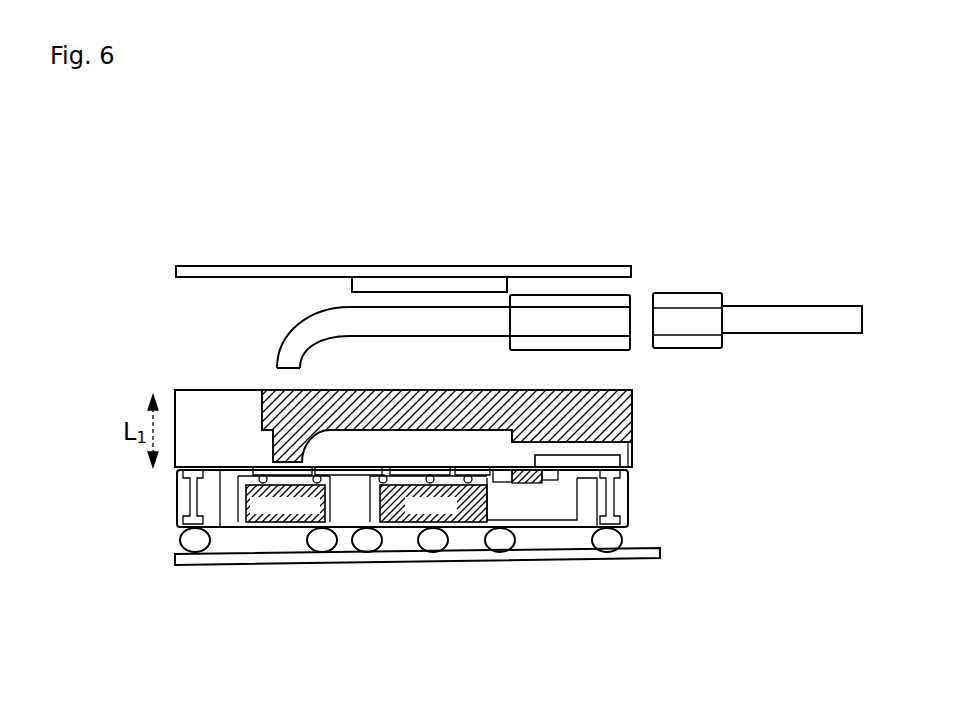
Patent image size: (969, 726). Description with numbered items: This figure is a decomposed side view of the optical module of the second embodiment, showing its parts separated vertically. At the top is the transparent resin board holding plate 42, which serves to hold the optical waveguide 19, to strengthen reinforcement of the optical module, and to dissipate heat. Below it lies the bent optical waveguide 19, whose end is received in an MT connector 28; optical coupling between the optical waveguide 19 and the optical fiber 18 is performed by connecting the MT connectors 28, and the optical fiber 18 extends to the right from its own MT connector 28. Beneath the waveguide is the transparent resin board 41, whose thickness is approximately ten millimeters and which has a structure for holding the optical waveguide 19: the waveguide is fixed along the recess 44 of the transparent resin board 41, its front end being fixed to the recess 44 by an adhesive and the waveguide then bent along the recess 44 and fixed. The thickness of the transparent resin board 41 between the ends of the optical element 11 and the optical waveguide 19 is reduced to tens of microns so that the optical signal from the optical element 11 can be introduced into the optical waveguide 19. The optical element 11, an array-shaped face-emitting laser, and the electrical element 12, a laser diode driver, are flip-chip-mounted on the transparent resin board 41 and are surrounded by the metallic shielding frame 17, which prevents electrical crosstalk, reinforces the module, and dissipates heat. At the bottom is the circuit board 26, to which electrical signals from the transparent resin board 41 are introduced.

The transparent resin board holding plate 42 is at (192, 266).
The optical waveguide 19 is at (429, 313).
The MT connector 28 is at (672, 293).
The optical fiber 18 is at (747, 313).
The transparent resin board 41 is at (174, 398).
The recess 44 is at (338, 393).
The metallic shielding frame 17 is at (228, 522).
The optical element 11 is at (270, 518).
The electrical element 12 is at (475, 522).
The circuit board 26 is at (653, 549).